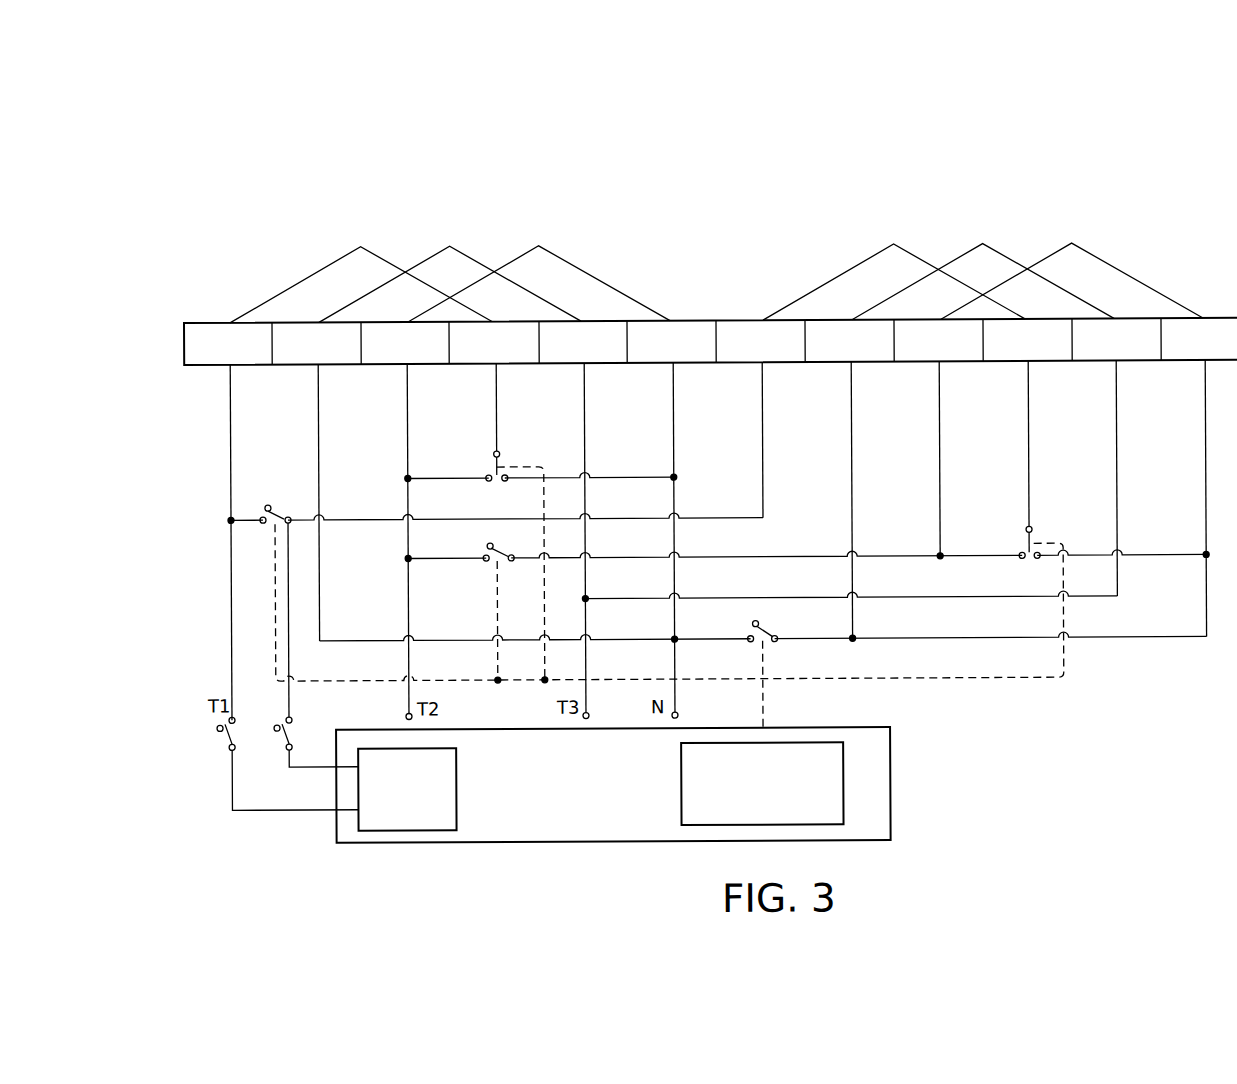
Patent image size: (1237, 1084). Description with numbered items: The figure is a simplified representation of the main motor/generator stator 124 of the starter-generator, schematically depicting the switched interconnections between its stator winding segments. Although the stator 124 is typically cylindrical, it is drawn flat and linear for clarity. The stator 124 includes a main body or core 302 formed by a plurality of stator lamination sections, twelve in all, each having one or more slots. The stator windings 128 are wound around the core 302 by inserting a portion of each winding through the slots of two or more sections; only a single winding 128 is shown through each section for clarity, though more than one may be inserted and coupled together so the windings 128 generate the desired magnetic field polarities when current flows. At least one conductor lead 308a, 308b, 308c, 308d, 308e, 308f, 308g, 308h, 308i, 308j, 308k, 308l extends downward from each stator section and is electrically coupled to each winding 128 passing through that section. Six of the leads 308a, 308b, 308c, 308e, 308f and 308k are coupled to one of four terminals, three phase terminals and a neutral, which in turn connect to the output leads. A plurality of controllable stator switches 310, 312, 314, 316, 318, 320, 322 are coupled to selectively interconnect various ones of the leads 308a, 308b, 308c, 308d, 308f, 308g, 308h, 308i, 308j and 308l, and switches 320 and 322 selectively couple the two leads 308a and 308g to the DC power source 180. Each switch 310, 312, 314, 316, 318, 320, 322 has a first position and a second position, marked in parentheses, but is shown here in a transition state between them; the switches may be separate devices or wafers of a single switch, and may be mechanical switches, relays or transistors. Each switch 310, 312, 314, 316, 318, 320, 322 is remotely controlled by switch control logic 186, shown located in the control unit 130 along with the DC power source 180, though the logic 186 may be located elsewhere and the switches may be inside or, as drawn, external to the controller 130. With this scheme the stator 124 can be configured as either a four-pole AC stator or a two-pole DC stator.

The main motor/generator stator 124 is at (688, 200).
The stator windings 128 is at (580, 232).
The stator core 302 is at (721, 312).
The conductor lead 308a is at (231, 416).
The conductor lead 308b is at (319, 437).
The conductor lead 308c is at (408, 437).
The conductor lead 308d is at (497, 437).
The conductor lead 308e is at (585, 437).
The conductor lead 308f is at (674, 437).
The conductor lead 308g is at (763, 437).
The conductor lead 308h is at (852, 437).
The conductor lead 308i is at (940, 437).
The conductor lead 308j is at (1029, 437).
The conductor lead 308k is at (1117, 437).
The conductor lead 308l is at (1206, 437).
The stator switch 310 is at (273, 505).
The stator switch 312 is at (492, 472).
The stator switch 314 is at (487, 545).
The stator switch 316 is at (767, 628).
The stator switch 318 is at (1025, 547).
The stator switch 320 is at (226, 742).
The stator switch 322 is at (289, 745).
The control unit 130 is at (890, 785).
The DC power source 180 is at (455, 792).
The switch control logic 186 is at (797, 742).